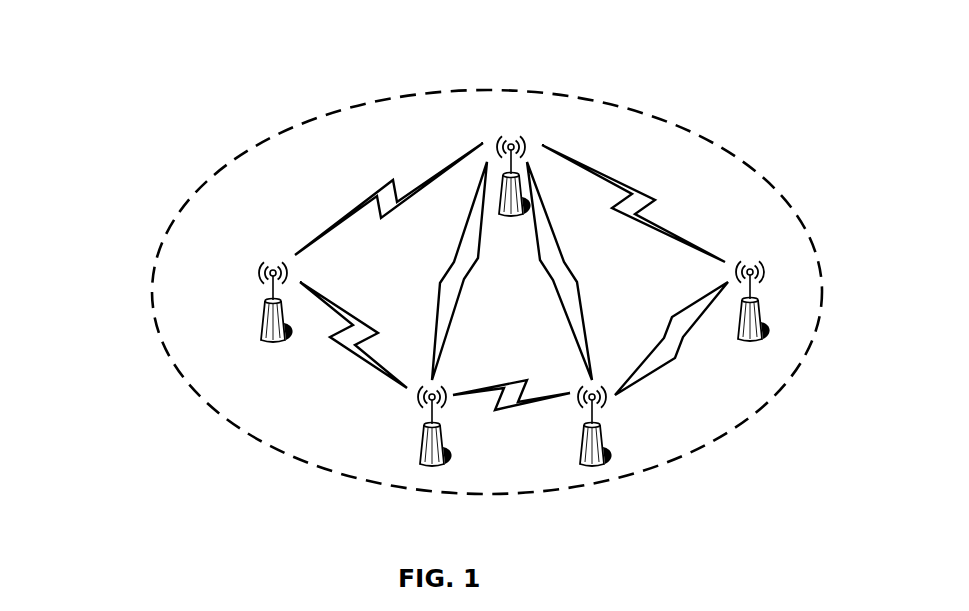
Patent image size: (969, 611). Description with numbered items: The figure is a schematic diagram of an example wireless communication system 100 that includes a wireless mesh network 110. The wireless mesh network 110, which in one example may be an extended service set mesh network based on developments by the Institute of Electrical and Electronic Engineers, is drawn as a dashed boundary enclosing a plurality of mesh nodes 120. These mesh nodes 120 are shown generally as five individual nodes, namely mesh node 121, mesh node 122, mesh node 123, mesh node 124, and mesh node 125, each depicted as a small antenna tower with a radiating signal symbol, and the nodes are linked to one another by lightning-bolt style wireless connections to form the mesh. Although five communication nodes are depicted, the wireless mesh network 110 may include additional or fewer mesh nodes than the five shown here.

The wireless communication system 100 is at (153, 60).
The wireless mesh network 110 is at (488, 90).
The mesh nodes 120 is at (288, 231).
The mesh node 121 is at (263, 327).
The mesh node 122 is at (422, 450).
The mesh node 123 is at (580, 450).
The mesh node 124 is at (750, 342).
The mesh node 125 is at (506, 178).